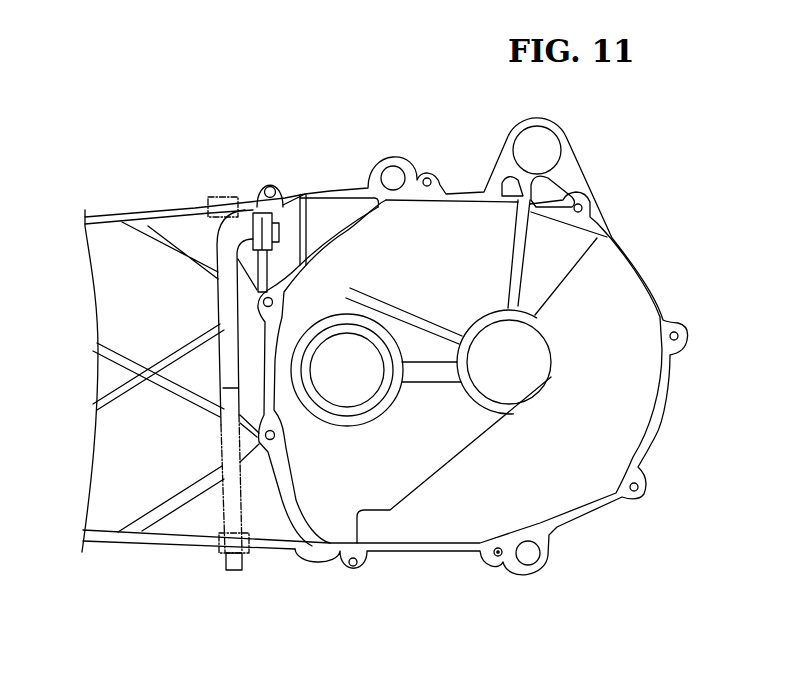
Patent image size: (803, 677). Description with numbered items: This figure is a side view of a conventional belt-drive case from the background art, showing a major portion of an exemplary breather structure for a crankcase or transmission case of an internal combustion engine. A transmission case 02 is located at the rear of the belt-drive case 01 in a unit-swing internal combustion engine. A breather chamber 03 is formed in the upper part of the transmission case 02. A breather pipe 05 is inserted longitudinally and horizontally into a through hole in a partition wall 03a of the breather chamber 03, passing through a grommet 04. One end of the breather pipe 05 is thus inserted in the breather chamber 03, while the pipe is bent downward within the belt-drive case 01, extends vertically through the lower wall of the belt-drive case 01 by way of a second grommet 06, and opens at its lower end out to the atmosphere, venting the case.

The belt-drive case 01 is at (149, 213).
The transmission case 02 is at (460, 220).
The breather chamber 03 is at (322, 210).
The partition wall 03a is at (267, 258).
The grommet 04 is at (233, 210).
The breather pipe 05 is at (218, 302).
The grommet 06 is at (215, 554).